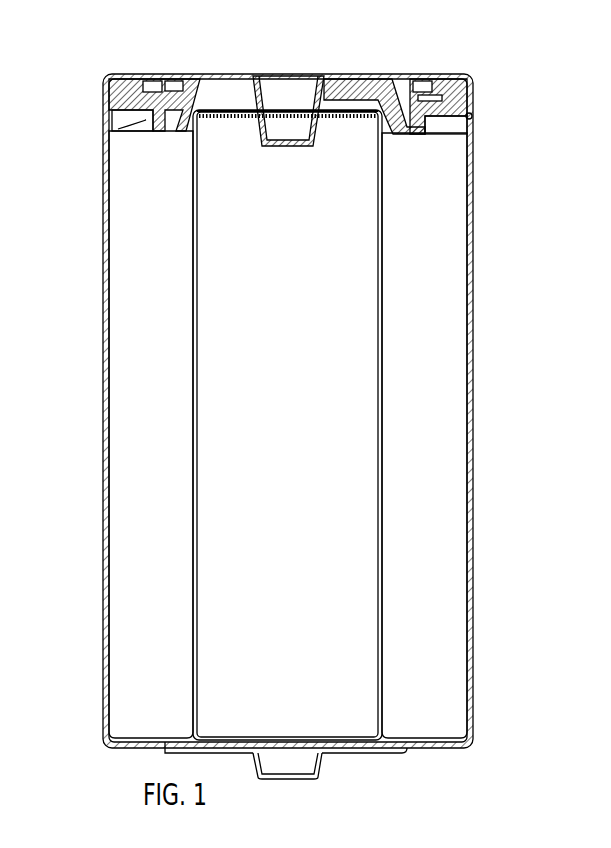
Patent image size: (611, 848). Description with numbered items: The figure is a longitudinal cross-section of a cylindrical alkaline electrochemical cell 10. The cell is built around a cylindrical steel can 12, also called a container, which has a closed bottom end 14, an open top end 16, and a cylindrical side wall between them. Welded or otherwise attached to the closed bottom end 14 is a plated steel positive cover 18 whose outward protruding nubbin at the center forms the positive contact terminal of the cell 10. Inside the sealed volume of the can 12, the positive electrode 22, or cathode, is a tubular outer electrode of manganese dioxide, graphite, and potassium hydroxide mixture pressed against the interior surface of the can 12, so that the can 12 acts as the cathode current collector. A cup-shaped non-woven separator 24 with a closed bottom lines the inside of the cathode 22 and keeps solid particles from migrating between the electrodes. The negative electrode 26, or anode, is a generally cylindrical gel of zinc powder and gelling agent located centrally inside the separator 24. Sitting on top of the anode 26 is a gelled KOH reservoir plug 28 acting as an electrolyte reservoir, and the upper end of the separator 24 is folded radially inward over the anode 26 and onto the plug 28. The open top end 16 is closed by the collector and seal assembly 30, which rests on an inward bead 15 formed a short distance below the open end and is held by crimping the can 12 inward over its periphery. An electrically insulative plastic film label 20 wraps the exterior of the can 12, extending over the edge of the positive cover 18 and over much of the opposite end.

The electrochemical cell 10 is at (513, 49).
The steel can 12 is at (475, 152).
The closed bottom end 14 is at (392, 750).
The inward bead 15 is at (474, 116).
The open top end 16 is at (418, 74).
The positive cover 18 is at (308, 778).
The plastic film label 20 is at (475, 203).
The positive electrode 22 is at (457, 252).
The separator 24 is at (388, 292).
The negative electrode 26 is at (355, 362).
The gelled KOH reservoir plug 28 is at (345, 76).
The collector and seal assembly 30 is at (108, 136).